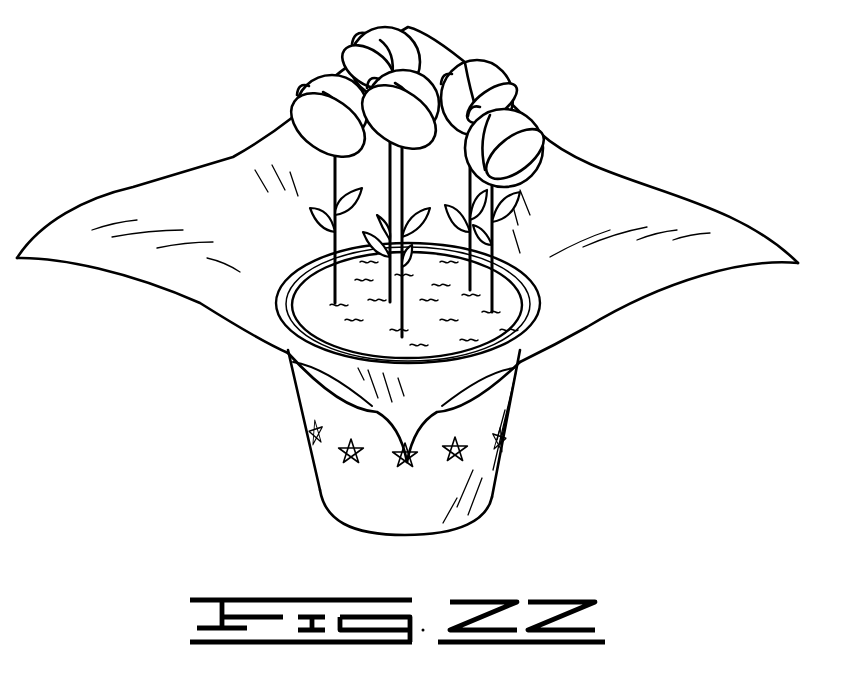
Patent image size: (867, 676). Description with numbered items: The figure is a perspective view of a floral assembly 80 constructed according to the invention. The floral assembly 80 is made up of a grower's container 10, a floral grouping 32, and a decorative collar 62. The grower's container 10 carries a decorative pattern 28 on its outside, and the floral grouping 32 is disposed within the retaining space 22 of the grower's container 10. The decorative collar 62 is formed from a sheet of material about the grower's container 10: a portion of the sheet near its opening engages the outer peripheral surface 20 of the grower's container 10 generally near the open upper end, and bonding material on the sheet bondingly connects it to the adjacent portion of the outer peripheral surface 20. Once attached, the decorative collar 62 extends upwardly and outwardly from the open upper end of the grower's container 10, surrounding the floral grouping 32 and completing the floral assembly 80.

The grower's container 10 is at (503, 455).
The outer peripheral surface 20 is at (313, 400).
The retaining space 22 is at (317, 307).
The decorative pattern 28 is at (350, 452).
The floral grouping 32 is at (507, 67).
The decorative collar 62 is at (747, 220).
The floral assembly 80 is at (672, 105).